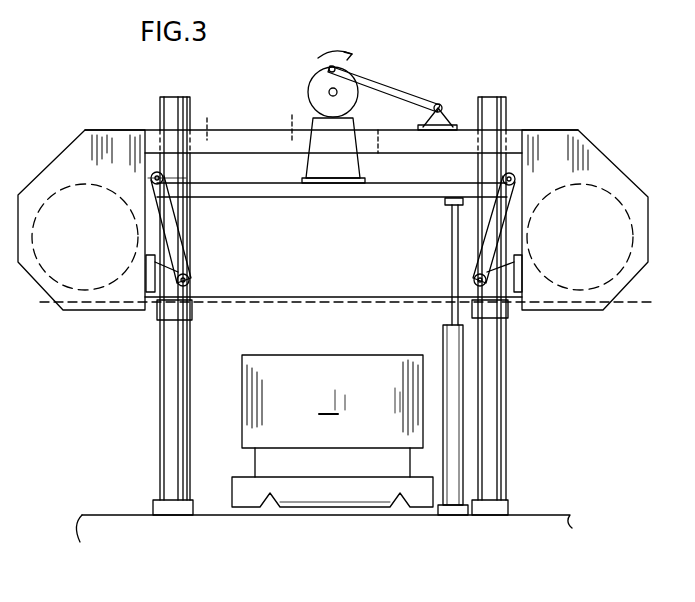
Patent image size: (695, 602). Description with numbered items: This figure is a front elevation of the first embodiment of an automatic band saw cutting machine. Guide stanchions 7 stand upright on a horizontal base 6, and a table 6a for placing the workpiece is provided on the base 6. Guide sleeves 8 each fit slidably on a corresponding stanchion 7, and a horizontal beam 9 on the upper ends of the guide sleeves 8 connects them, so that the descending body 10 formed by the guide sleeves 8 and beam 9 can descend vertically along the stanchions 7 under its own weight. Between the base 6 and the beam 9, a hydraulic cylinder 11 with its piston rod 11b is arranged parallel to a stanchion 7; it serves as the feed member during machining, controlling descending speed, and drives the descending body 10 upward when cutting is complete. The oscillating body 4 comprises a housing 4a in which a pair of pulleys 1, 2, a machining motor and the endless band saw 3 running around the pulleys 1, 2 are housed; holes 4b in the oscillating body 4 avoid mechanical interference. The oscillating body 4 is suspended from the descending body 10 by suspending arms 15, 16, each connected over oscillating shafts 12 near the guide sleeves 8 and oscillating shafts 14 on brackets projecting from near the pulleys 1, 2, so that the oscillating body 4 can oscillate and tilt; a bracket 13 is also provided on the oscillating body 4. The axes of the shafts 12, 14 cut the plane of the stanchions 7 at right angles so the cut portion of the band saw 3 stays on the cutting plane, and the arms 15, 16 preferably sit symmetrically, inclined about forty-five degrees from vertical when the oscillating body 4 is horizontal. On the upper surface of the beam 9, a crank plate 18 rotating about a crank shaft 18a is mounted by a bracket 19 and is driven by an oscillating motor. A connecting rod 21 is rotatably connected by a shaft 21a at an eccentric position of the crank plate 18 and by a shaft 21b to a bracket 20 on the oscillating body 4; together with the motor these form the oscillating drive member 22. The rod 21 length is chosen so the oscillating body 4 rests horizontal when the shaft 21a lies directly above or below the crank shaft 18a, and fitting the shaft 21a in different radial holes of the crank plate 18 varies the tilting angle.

The pulley 1 is at (60, 296).
The pulley 2 is at (600, 306).
The band saw 3 is at (316, 298).
The oscillating body 4 is at (338, 230).
The housing 4a is at (592, 166).
The holes 4b is at (470, 152).
The horizontal base 6 is at (535, 515).
The table 6a is at (345, 498).
The guide stanchions 7 is at (174, 396).
The guide sleeves 8 is at (176, 312).
The horizontal beam 9 is at (288, 186).
The descending body 10 is at (380, 182).
The hydraulic cylinder 11 is at (431, 356).
The piston rod 11b is at (452, 233).
The oscillating shafts 12 is at (156, 172).
The bracket 13 is at (160, 298).
The oscillating shafts 14 is at (190, 281).
The suspending arm 15 is at (172, 220).
The suspending arm 16 is at (492, 240).
The crank plate 18 is at (334, 96).
The crank shaft 18a is at (329, 91).
The bracket 19 is at (308, 160).
The bracket 20 is at (450, 112).
The connecting rod 21 is at (375, 75).
The shaft 21a is at (331, 67).
The shaft 21b is at (440, 104).
The oscillating drive member 22 is at (378, 76).